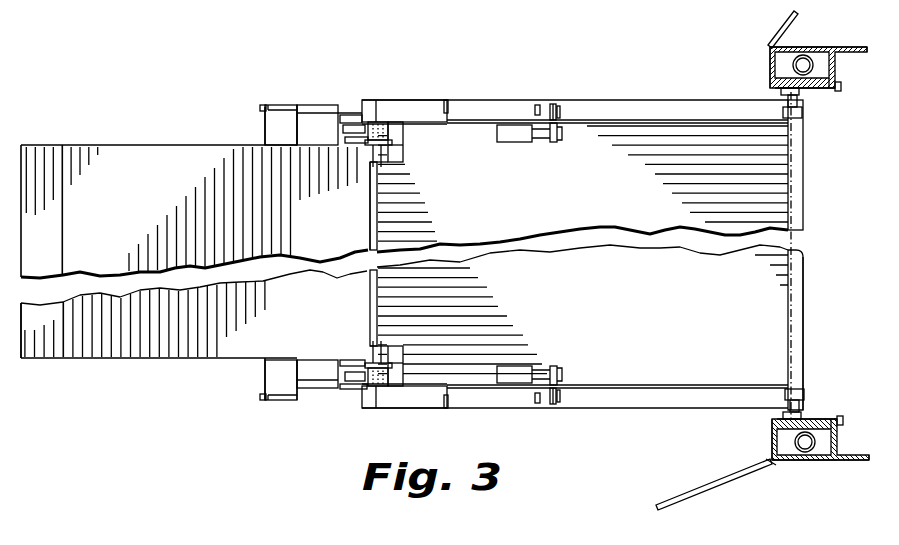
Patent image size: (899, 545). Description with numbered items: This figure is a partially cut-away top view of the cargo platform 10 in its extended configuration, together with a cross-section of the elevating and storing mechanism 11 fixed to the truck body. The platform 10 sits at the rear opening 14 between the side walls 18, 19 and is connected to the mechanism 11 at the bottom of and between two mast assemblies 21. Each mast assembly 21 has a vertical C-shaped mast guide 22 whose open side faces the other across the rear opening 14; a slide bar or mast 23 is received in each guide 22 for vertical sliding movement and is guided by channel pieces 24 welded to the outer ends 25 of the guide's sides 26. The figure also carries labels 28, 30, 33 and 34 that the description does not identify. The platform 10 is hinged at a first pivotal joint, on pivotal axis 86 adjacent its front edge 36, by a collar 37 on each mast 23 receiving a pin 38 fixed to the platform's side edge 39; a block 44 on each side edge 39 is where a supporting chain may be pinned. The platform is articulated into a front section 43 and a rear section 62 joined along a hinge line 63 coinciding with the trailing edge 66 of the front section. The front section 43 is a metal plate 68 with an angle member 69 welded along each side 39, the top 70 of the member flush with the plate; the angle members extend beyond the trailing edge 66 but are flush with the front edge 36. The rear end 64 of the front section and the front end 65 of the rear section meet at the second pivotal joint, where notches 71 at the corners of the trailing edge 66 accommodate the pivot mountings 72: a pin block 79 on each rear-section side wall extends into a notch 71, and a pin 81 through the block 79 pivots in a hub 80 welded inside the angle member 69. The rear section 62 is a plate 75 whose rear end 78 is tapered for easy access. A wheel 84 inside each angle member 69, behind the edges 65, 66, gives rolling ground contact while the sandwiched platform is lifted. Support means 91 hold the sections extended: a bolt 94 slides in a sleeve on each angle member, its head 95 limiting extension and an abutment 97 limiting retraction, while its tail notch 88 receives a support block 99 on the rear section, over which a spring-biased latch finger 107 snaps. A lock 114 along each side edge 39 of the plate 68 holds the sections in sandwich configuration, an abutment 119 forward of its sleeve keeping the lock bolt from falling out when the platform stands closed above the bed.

The cargo platform 10 is at (185, 412).
The elevating and storing mechanism 11 is at (724, 67).
The rear opening 14 is at (818, 267).
The side wall 18 is at (857, 461).
The side wall 19 is at (855, 47).
The mast assembly 21 is at (827, 26).
The mast guide 22 is at (783, 46).
The mast 23 is at (812, 90).
The channel pieces 24 is at (830, 90).
The outer ends 25 is at (847, 82).
The sides 26 is at (770, 69).
The rod bore 28 is at (819, 452).
The guide rod 30 is at (787, 62).
The link arm 33 is at (770, 45).
The pivot 34 is at (768, 464).
The front edge 36 is at (806, 203).
The collar 37 is at (783, 97).
The pin 38 is at (783, 107).
The side edge 39 is at (643, 121).
The front section 43 is at (582, 207).
The block 44 is at (556, 103).
The rear section 62 is at (194, 253).
The hinge line 63 is at (381, 100).
The rear end 64 is at (382, 228).
The front end 65 is at (353, 293).
The trailing edge 66 is at (378, 212).
The metal plate 68 is at (583, 314).
The angle member 69 is at (592, 99).
The top 70 is at (620, 124).
The notch 71 is at (405, 156).
The pivot mountings 72 is at (405, 134).
The plate 75 is at (194, 294).
The rear end 78 is at (33, 335).
The pin block 79 is at (347, 140).
The hub 80 is at (386, 122).
The pin 81 is at (376, 168).
The wheel 84 is at (341, 109).
The pivotal axis 86 is at (793, 328).
The notch 88 is at (292, 104).
The support means 91 is at (363, 97).
The bolt 94 is at (303, 105).
The head 95 is at (449, 103).
The abutment 97 is at (536, 106).
The support block 99 is at (273, 126).
The latch finger 107 is at (260, 108).
The lock 114 is at (515, 149).
The abutment 119 is at (555, 127).